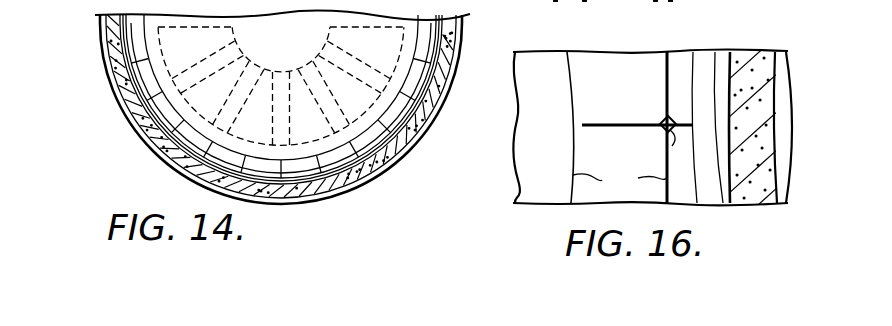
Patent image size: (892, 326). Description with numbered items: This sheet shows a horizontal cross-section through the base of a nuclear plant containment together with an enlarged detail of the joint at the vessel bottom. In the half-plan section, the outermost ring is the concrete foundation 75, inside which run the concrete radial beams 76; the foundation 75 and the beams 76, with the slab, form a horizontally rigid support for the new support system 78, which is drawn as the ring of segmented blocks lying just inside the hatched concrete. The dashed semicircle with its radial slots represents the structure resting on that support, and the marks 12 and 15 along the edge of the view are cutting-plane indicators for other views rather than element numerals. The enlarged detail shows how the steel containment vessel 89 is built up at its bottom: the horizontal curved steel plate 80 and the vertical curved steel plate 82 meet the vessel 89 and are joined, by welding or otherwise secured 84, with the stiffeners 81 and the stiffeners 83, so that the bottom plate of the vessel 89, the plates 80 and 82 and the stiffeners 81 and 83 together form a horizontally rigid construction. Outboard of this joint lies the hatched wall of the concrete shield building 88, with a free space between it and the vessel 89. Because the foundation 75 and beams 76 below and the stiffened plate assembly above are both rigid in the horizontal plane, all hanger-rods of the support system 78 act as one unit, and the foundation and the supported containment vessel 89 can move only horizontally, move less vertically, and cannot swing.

In FIG. 14, the stator housing 12 is at (92, 25).
In FIG. 14, the rotor 15 is at (202, 105).
In FIG. 14, the concrete foundation 75 is at (354, 186).
In FIG. 14, the concrete radial beams 76 is at (384, 87).
In FIG. 14, the support system 78 is at (298, 154).
In FIG. 14, the concrete shield building 88 is at (387, 152).
In FIG. 16, the concrete shield building 88 is at (778, 110).
In FIG. 16, the horizontal curved steel plate 80 is at (620, 180).
In FIG. 16, the stiffeners 81 is at (630, 123).
In FIG. 16, the vertical curved steel plate 82 is at (666, 69).
In FIG. 16, the stiffeners 83 is at (675, 119).
In FIG. 16, the welding 84 is at (667, 142).
In FIG. 16, the steel containment vessel 89 is at (519, 110).